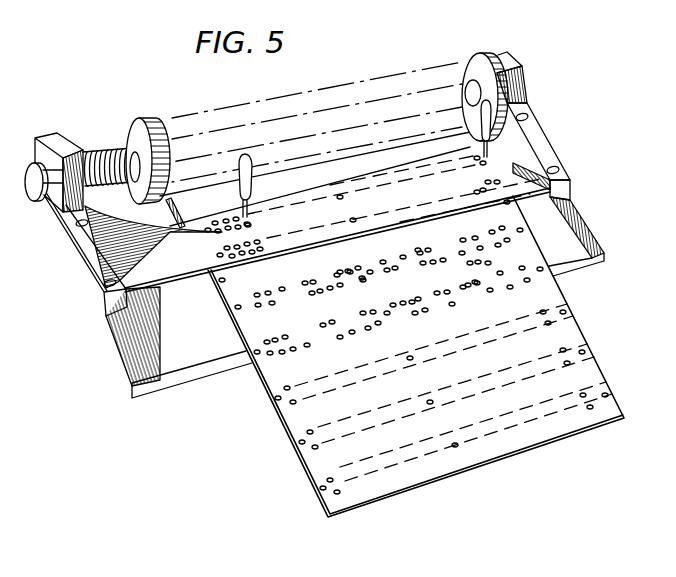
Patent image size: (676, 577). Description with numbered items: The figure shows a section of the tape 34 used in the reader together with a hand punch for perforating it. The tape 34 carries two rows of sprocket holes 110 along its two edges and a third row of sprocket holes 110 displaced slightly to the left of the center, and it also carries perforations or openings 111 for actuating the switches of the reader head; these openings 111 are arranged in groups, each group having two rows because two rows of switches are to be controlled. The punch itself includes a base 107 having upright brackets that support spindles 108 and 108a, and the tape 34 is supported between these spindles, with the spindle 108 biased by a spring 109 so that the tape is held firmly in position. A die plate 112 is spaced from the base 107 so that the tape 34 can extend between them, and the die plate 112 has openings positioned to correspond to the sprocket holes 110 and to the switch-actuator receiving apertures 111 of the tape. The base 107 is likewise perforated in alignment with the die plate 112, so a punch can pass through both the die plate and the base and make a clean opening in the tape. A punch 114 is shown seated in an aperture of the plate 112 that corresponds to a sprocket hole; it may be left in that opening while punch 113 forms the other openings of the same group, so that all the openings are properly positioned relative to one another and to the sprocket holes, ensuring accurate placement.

The tape 34 is at (317, 92).
The base 107 is at (116, 325).
The spindle 108 is at (147, 118).
The spindle 108a is at (490, 49).
The spring 109 is at (108, 148).
The sprocket holes 110 is at (236, 306).
The perforations or openings 111 is at (291, 402).
The die plate 112 is at (520, 162).
The punch 113 is at (250, 166).
The punch 114 is at (478, 108).